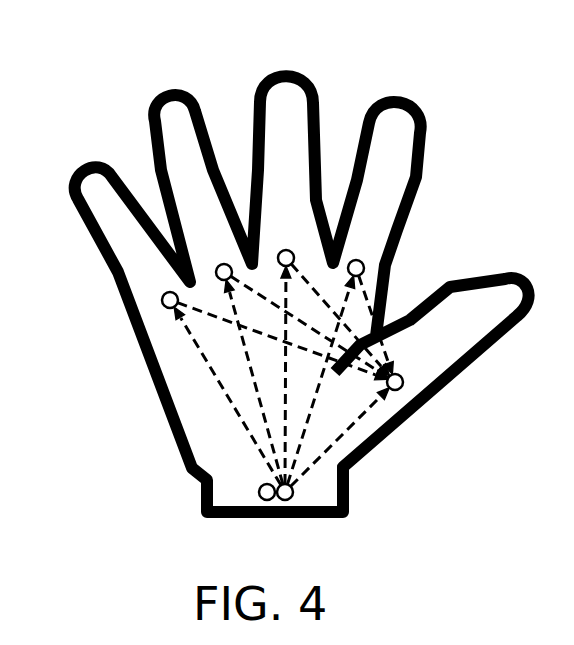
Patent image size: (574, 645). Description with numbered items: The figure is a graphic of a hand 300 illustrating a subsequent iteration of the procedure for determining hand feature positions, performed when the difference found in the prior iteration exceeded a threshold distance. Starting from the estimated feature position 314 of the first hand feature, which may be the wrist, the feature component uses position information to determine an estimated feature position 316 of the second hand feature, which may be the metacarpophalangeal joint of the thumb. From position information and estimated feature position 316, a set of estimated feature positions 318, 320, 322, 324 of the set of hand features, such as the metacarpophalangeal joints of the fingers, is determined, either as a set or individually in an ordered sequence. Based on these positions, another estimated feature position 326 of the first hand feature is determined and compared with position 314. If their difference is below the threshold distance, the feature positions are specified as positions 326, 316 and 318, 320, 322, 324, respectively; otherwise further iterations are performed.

The hand 300 is at (410, 100).
The estimated feature position of the first hand feature 314 is at (282, 500).
The estimated feature position of the second hand feature 316 is at (402, 382).
The estimated feature position of the set of hand features 318 is at (360, 262).
The estimated feature position of the set of hand features 320 is at (287, 251).
The estimated feature position of the set of hand features 322 is at (222, 265).
The estimated feature position of the set of hand features 324 is at (162, 300).
The another estimated feature position of the first hand feature 326 is at (260, 490).